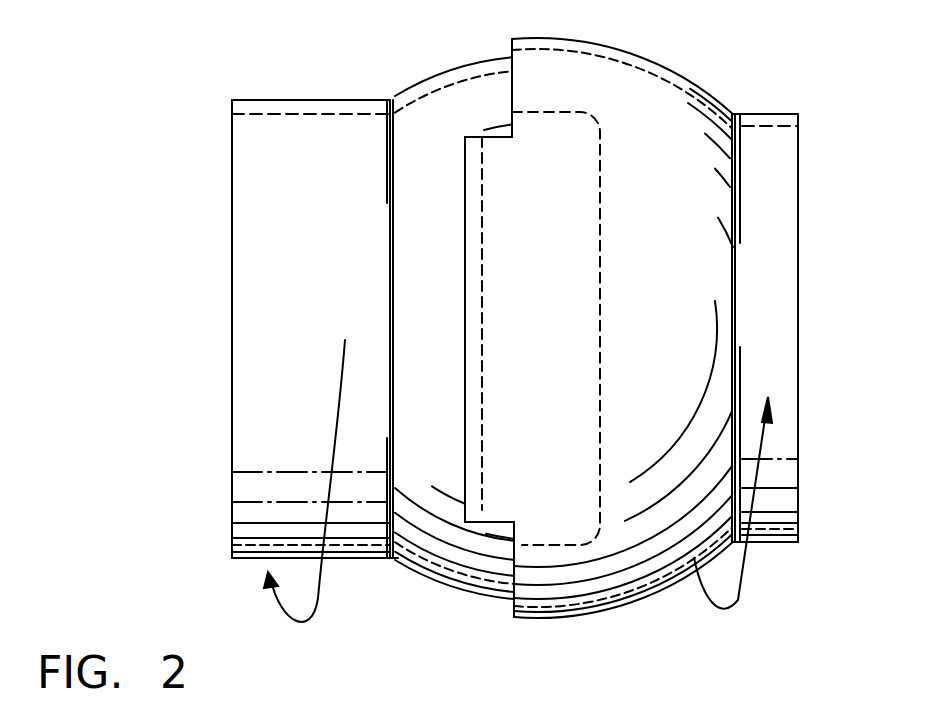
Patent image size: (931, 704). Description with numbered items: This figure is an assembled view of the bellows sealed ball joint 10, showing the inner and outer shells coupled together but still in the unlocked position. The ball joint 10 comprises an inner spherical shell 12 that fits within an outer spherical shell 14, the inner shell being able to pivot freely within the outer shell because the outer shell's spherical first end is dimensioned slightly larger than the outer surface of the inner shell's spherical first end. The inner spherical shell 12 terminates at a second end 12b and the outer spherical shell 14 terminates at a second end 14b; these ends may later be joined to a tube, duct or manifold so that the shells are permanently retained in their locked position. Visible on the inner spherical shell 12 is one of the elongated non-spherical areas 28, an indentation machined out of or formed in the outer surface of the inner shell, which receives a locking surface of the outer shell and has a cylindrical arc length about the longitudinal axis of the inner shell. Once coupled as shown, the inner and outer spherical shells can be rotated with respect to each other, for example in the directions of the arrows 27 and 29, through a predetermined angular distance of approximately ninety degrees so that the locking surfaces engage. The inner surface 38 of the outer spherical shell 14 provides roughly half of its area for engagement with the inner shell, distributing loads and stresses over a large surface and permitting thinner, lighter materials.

The ball joint 10 is at (543, 349).
The inner spherical shell 12 is at (247, 560).
The second end of inner spherical shell 12b is at (265, 100).
The outer spherical shell 14 is at (704, 90).
The second end of outer spherical shell 14b is at (798, 298).
The arrow 27 is at (745, 580).
The elongated non-spherical areas 28 is at (500, 128).
The arrow 29 is at (320, 598).
The inner surface of outer spherical shell 38 is at (512, 75).